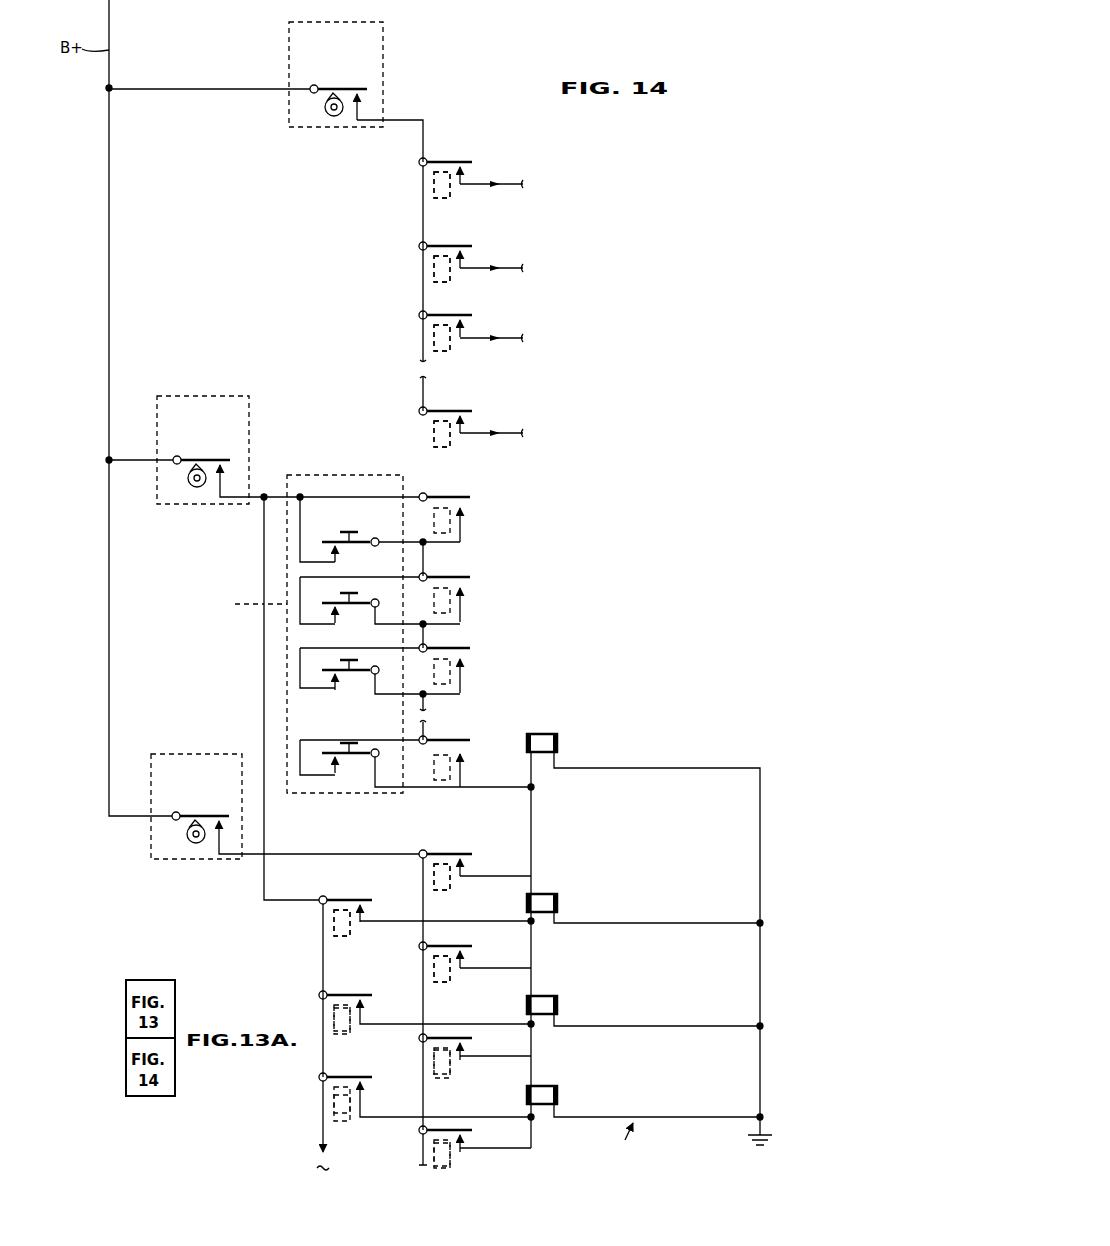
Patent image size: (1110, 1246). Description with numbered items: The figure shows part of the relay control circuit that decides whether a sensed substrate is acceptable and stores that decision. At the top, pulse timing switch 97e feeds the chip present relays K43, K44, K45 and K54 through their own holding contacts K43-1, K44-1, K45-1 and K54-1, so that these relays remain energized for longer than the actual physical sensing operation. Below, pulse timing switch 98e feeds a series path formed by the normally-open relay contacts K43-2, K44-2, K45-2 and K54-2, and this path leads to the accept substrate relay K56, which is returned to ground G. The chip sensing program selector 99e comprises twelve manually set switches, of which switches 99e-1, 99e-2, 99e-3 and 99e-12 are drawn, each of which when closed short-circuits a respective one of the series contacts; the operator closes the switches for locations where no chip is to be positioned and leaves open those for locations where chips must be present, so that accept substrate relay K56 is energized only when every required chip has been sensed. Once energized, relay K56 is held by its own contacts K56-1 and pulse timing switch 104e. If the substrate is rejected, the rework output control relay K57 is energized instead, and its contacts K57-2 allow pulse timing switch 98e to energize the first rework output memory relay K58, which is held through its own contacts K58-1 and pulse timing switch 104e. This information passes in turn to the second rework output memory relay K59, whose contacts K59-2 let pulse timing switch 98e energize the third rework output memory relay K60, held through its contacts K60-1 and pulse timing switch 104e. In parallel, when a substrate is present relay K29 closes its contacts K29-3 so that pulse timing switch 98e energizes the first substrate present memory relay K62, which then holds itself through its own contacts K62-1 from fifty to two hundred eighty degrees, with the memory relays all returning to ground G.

The pulse timing switch 97e is at (385, 50).
The pulse timing switch 98e is at (250, 406).
The chip sensing program selector 99e is at (333, 473).
The pulse timing switch 104e is at (150, 841).
The selector switch 99e-1 is at (330, 538).
The selector switch 99e-2 is at (333, 598).
The selector switch 99e-3 is at (333, 665).
The selector switch 99e-12 is at (333, 750).
The relay contacts K43-1 is at (464, 160).
The relay contacts K44-1 is at (464, 244).
The relay contacts K45-1 is at (466, 313).
The relay contacts K54-1 is at (462, 410).
The normally-open relay contacts K43-2 is at (466, 497).
The normally-open relay contacts K44-2 is at (466, 576).
The normally-open relay contacts K45-2 is at (466, 648).
The normally-open relay contacts K54-2 is at (455, 735).
The chip present relay K43 is at (448, 201).
The chip present relay K44 is at (448, 282).
The chip present relay K45 is at (448, 352).
The chip present relay K54 is at (445, 446).
The accept substrate relay K56 is at (557, 735).
The relay contacts K56-1 is at (478, 842).
The relay contacts K57-2 is at (356, 899).
The rework output control relay K57 is at (338, 940).
The first rework output memory relay K58 is at (545, 893).
The relay contacts K58-1 is at (466, 945).
The relay contacts K59-2 is at (368, 984).
The second rework output memory relay K59 is at (338, 1036).
The first substrate present memory relay K62 is at (546, 990).
The relay contacts K60-1 is at (466, 1040).
The third rework output memory relay K60 is at (448, 1082).
The relay contacts K29-3 is at (360, 1078).
The relay K29 is at (338, 1122).
The relay contacts K62-1 is at (466, 1132).
The ground G is at (762, 881).